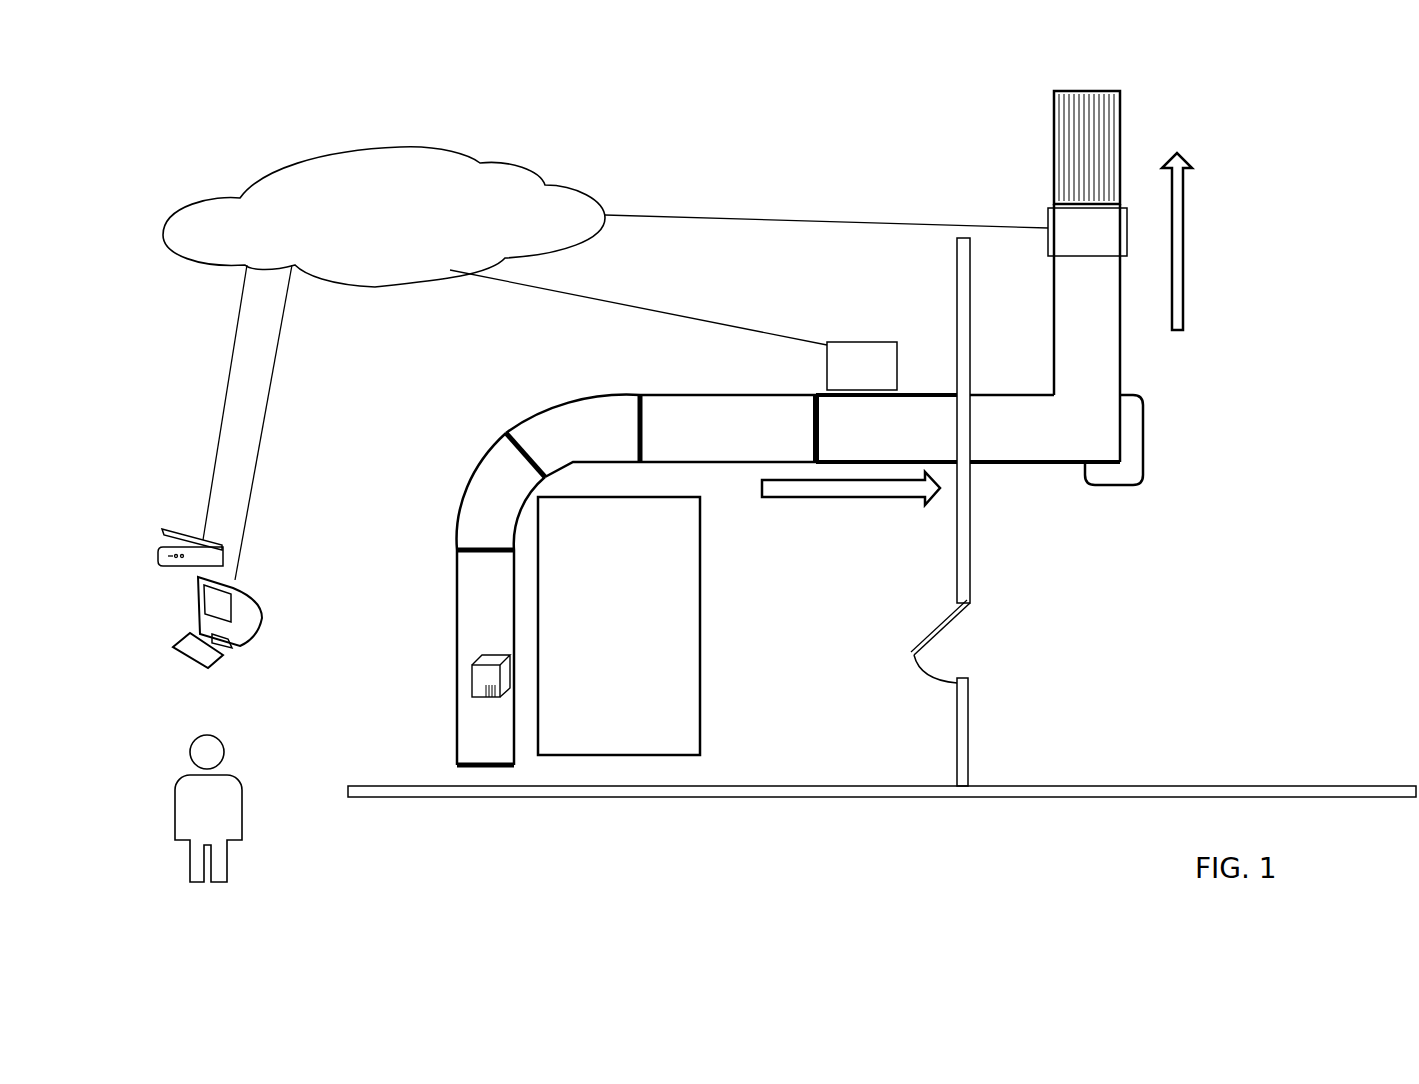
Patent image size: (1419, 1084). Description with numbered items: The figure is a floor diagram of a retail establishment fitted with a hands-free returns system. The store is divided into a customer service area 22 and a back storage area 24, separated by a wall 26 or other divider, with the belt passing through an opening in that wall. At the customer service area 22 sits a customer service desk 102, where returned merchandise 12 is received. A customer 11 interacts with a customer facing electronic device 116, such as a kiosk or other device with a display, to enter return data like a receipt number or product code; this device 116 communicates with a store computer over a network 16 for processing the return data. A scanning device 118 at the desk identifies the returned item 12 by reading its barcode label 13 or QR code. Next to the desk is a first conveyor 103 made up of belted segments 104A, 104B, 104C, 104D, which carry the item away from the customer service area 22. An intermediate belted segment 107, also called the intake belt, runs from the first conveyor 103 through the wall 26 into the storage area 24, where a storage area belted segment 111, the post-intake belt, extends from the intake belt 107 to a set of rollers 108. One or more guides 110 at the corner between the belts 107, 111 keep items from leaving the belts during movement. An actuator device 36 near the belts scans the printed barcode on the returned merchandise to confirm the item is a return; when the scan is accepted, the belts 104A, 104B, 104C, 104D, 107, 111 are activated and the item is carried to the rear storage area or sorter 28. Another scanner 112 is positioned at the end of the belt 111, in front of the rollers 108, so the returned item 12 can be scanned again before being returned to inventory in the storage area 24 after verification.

The customer 11 is at (225, 765).
The returned merchandise 12 is at (446, 700).
The barcode label 13 is at (493, 701).
The network 16 is at (385, 247).
The customer service area 22 is at (801, 577).
The storage area 24 is at (1269, 399).
The wall 26 is at (957, 290).
The rear storage area/sorter 28 is at (986, 125).
The actuator device 36 is at (869, 381).
The customer service desk 102 is at (613, 689).
The first conveyor 103 is at (370, 512).
The belted segment 104A is at (457, 645).
The belted segment 104B is at (477, 458).
The belted segment 104C is at (603, 393).
The belted segment 104D is at (752, 392).
The intermediate belted segment 107 is at (935, 393).
The rollers 108 is at (1120, 112).
The guide 110 is at (1145, 487).
The storage area belted segment 111 is at (1054, 356).
The scanner 112 is at (1087, 232).
The customer facing electronic device 116 is at (262, 598).
The scanning device 118 is at (173, 530).